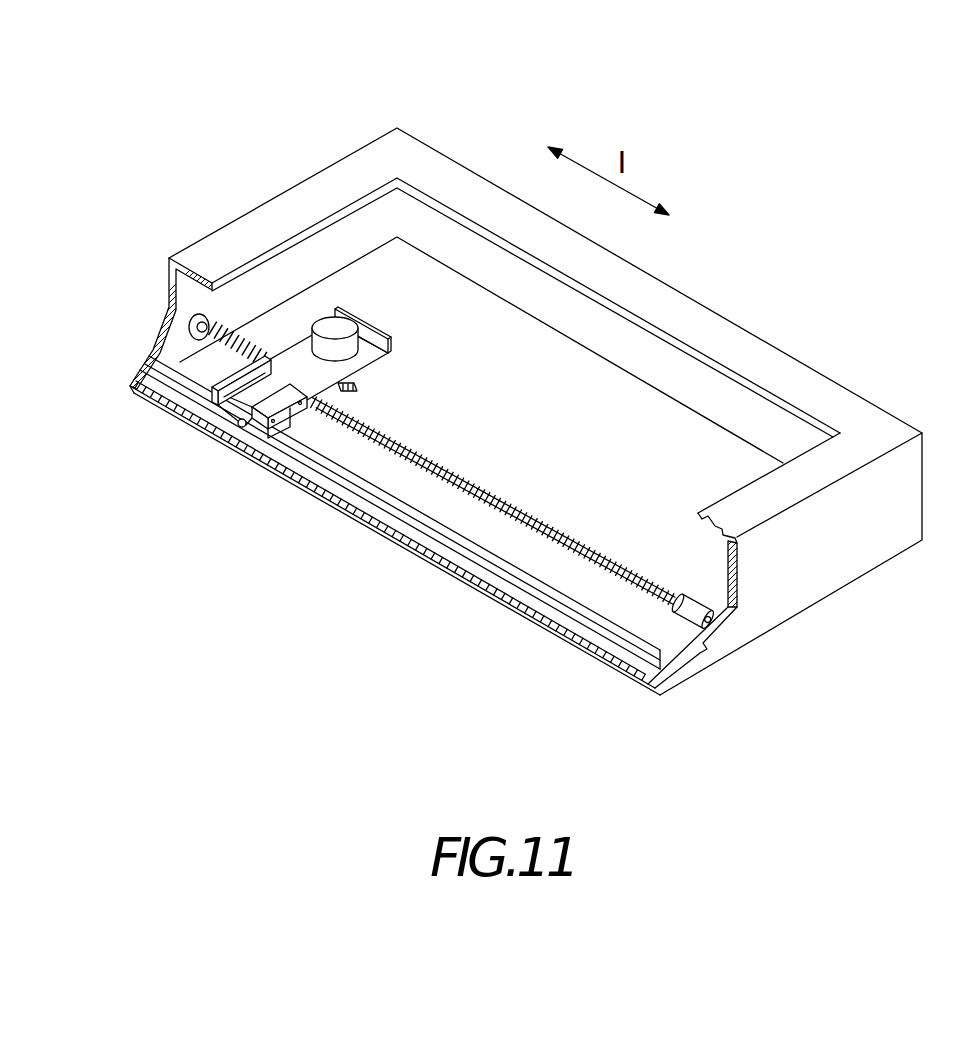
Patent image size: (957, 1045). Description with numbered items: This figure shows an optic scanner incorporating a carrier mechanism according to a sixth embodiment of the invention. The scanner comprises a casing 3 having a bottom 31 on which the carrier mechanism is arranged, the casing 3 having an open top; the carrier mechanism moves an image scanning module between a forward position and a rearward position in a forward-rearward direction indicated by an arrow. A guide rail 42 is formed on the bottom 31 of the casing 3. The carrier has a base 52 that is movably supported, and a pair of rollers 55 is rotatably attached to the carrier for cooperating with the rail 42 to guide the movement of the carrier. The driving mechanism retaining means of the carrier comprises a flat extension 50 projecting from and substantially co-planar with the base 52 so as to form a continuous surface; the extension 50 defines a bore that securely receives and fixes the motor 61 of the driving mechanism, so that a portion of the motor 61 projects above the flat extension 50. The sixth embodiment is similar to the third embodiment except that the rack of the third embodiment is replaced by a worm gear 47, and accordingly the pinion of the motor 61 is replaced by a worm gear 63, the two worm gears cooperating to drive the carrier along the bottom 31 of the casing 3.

The casing 3 is at (863, 547).
The bottom 31 is at (733, 472).
The guide rail 42 is at (463, 548).
The worm gear 47 is at (425, 455).
The flat extension 50 is at (302, 365).
The base 52 is at (258, 390).
The rollers 55 is at (243, 415).
The motor 61 is at (333, 330).
The worm gear 63 is at (357, 387).